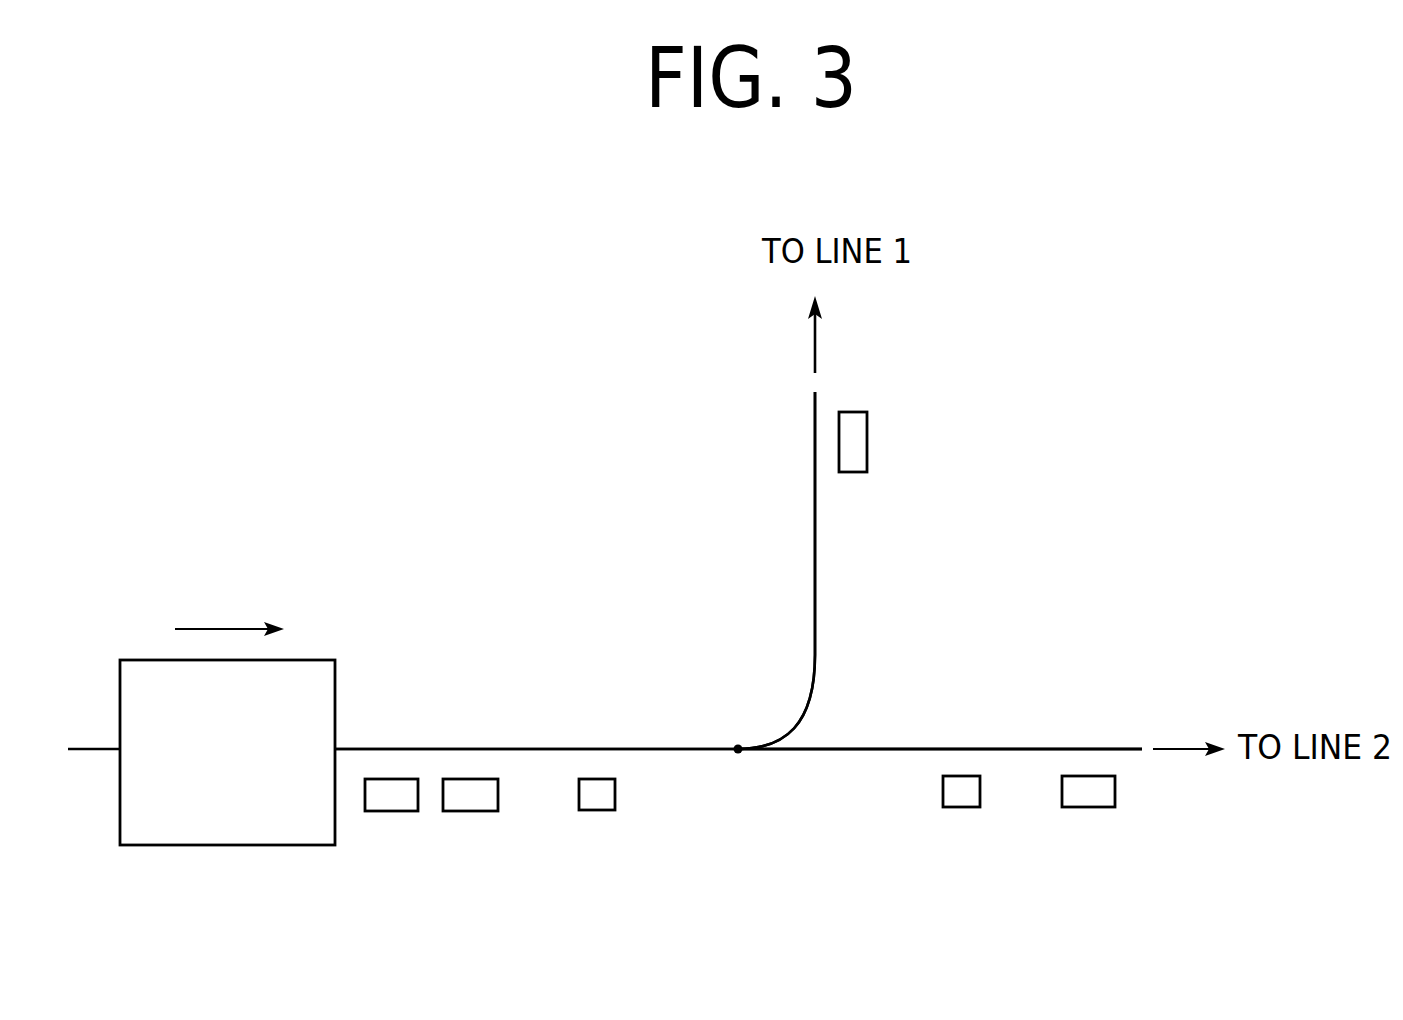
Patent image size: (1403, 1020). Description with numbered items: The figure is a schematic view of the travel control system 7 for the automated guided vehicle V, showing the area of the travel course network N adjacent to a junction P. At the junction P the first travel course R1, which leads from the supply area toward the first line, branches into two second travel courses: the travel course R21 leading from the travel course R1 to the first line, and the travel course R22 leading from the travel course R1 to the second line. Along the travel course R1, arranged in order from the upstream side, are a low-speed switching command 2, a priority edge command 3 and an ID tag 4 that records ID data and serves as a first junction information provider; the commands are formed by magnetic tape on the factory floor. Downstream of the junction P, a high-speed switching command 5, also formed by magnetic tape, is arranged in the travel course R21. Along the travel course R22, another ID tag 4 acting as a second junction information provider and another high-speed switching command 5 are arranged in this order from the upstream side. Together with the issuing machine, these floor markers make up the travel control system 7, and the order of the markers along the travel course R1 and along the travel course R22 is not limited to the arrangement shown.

The vehicle V is at (237, 845).
The low-speed switching command 2 is at (393, 811).
The priority edge command 3 is at (468, 811).
The ID tag 4 is at (599, 810).
The high-speed switching command 5 is at (867, 445).
The travel control system 7 is at (1045, 392).
The junction P is at (737, 746).
The travel course network N is at (813, 760).
The first travel course R1 is at (530, 748).
The second travel course R21 is at (813, 486).
The second travel course R22 is at (1018, 748).